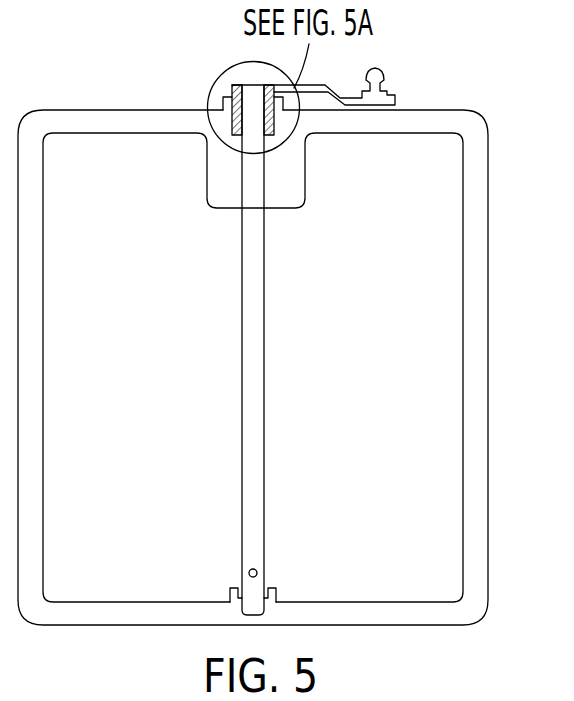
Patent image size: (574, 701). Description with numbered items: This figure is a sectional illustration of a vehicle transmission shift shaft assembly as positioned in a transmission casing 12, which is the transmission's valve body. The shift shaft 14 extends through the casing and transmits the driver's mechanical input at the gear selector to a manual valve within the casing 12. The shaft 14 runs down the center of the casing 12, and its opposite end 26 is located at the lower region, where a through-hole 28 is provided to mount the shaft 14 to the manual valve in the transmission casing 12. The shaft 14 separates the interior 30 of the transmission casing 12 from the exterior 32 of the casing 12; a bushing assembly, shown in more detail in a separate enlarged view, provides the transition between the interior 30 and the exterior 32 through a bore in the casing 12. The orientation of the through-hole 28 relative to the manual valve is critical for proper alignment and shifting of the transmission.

The transmission casing 12 is at (476, 376).
The shift shaft 14 is at (255, 375).
The opposite end 26 is at (255, 508).
The through-hole 28 is at (248, 574).
The interior 30 is at (93, 178).
The exterior 32 is at (426, 85).